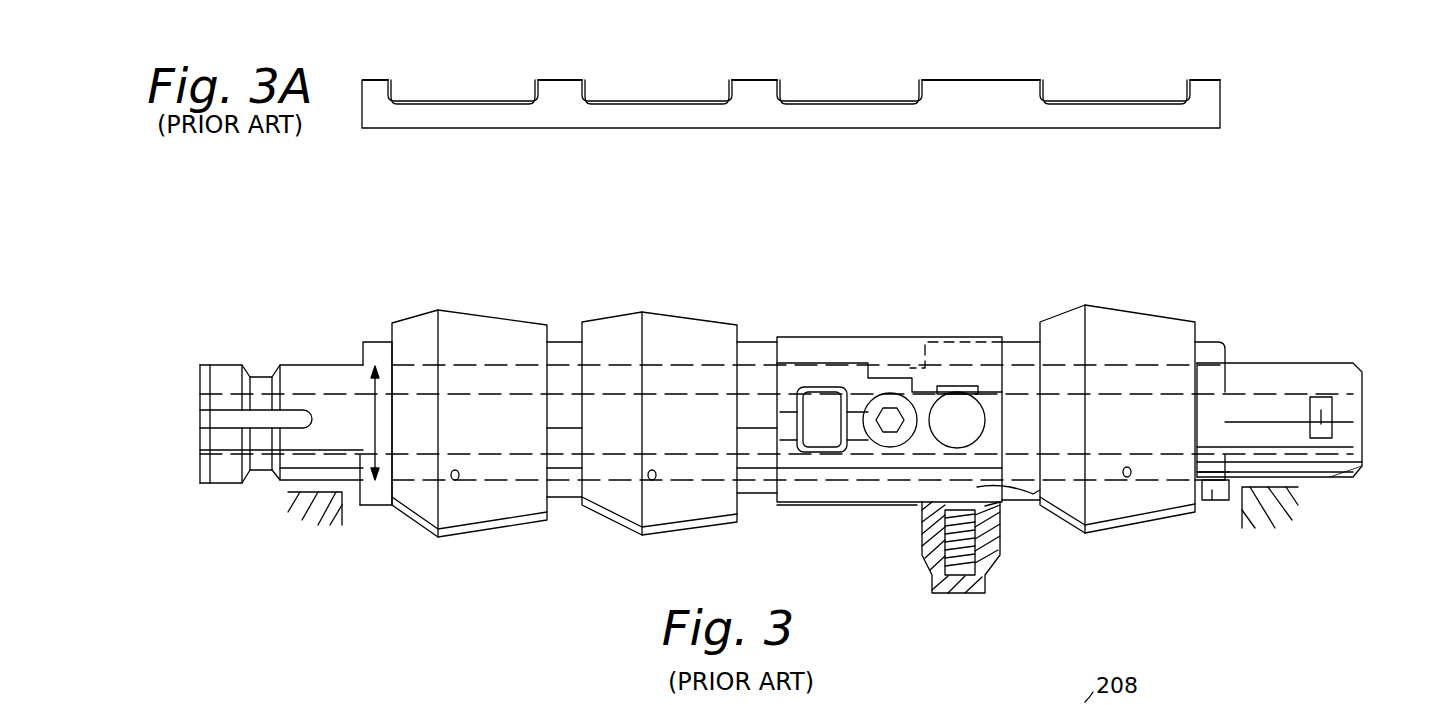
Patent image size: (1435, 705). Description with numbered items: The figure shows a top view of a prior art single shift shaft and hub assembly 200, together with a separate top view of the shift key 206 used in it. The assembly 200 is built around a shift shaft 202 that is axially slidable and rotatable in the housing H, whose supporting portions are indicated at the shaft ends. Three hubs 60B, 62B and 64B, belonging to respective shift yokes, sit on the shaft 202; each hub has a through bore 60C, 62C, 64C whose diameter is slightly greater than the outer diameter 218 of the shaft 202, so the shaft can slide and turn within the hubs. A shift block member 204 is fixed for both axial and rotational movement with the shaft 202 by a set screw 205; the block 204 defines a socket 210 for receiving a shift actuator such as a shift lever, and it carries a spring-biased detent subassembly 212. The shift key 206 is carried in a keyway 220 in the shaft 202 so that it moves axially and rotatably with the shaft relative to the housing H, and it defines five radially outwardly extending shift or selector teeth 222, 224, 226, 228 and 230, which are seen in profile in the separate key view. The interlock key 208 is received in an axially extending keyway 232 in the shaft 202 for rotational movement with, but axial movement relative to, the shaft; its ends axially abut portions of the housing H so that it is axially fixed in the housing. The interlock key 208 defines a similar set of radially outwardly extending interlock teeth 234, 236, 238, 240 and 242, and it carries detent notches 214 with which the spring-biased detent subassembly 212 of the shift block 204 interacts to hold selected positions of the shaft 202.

In FIG. 3, the single shift shaft and hub assembly 200 is at (1193, 293).
In FIG. 3, the shift shaft 202 is at (1287, 373).
In FIG. 3, the shift block member 204 is at (890, 350).
In FIG. 3, the set screw 205 is at (890, 425).
In FIG. 3A, the shift key 206 is at (1102, 94).
In FIG. 3, the shift key 206 is at (1217, 380).
In FIG. 3, the interlock key 208 is at (1212, 502).
In FIG. 3, the socket 210 is at (820, 405).
In FIG. 3, the spring-biased detent subassembly 212 is at (1001, 558).
In FIG. 3, the detent notches 214 is at (1010, 491).
In FIG. 3, the outer diameter of shaft 218 is at (375, 418).
In FIG. 3, the keyway 220 is at (1297, 392).
In FIG. 3A, the shift tooth 222 is at (375, 90).
In FIG. 3, the shift tooth 222 is at (372, 352).
In FIG. 3A, the shift tooth 224 is at (563, 90).
In FIG. 3, the shift tooth 224 is at (562, 352).
In FIG. 3A, the shift tooth 226 is at (752, 90).
In FIG. 3, the shift tooth 226 is at (750, 350).
In FIG. 3A, the shift tooth 228 is at (970, 90).
In FIG. 3, the shift tooth 228 is at (1015, 352).
In FIG. 3A, the shift tooth 230 is at (1205, 85).
In FIG. 3, the shift tooth 230 is at (1208, 350).
In FIG. 3, the axially extending keyway 232 is at (1333, 468).
In FIG. 3, the interlock tooth 234 is at (377, 490).
In FIG. 3, the interlock tooth 236 is at (563, 497).
In FIG. 3, the interlock tooth 238 is at (757, 495).
In FIG. 3, the interlock tooth 240 is at (1040, 500).
In FIG. 3, the interlock tooth 242 is at (1222, 502).
In FIG. 3, the hub 60B is at (472, 330).
In FIG. 3, the through bore 60C is at (458, 480).
In FIG. 3, the hub 62B is at (645, 318).
In FIG. 3, the through bore 62C is at (655, 480).
In FIG. 3, the hub 64B is at (1105, 325).
In FIG. 3, the through bore 64C is at (1130, 478).
In FIG. 3, the housing H is at (300, 505).